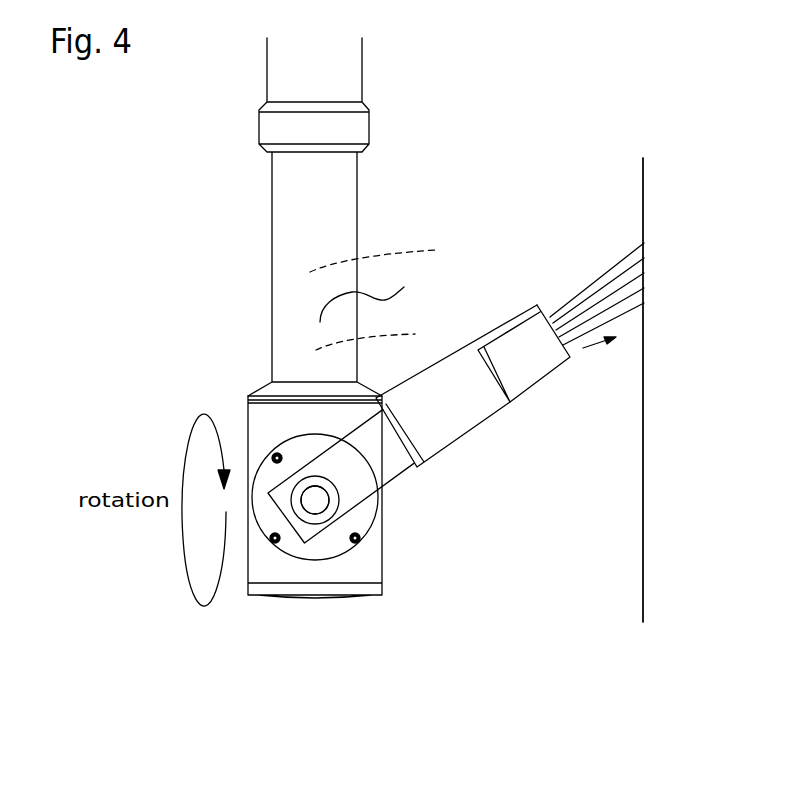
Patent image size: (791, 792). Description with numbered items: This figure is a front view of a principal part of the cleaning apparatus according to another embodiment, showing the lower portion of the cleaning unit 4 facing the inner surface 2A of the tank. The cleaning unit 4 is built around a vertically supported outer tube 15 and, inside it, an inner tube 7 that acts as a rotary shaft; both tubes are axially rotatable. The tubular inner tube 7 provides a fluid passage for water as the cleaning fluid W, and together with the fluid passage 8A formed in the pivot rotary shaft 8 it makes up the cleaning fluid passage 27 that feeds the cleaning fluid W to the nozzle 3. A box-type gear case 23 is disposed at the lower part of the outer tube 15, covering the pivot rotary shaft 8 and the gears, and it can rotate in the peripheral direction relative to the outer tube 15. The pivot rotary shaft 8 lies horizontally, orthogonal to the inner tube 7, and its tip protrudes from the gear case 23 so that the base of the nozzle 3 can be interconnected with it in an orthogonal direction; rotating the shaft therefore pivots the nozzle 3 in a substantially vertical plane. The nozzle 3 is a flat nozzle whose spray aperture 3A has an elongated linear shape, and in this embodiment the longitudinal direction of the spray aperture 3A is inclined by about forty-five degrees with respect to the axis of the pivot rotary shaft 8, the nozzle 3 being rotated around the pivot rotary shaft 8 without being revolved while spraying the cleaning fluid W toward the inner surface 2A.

The cleaning unit 4 is at (386, 225).
The inner tube 7 is at (380, 253).
The outer tube 15 is at (379, 299).
The cleaning fluid passage 27 is at (381, 334).
The gear case 23 is at (372, 565).
The pivot rotary shaft 8 is at (320, 498).
The fluid passage 8A is at (315, 500).
The nozzle 3 is at (460, 423).
The spray aperture 3A is at (544, 312).
The cleaning fluid W is at (605, 288).
The inner surface 2A is at (642, 402).